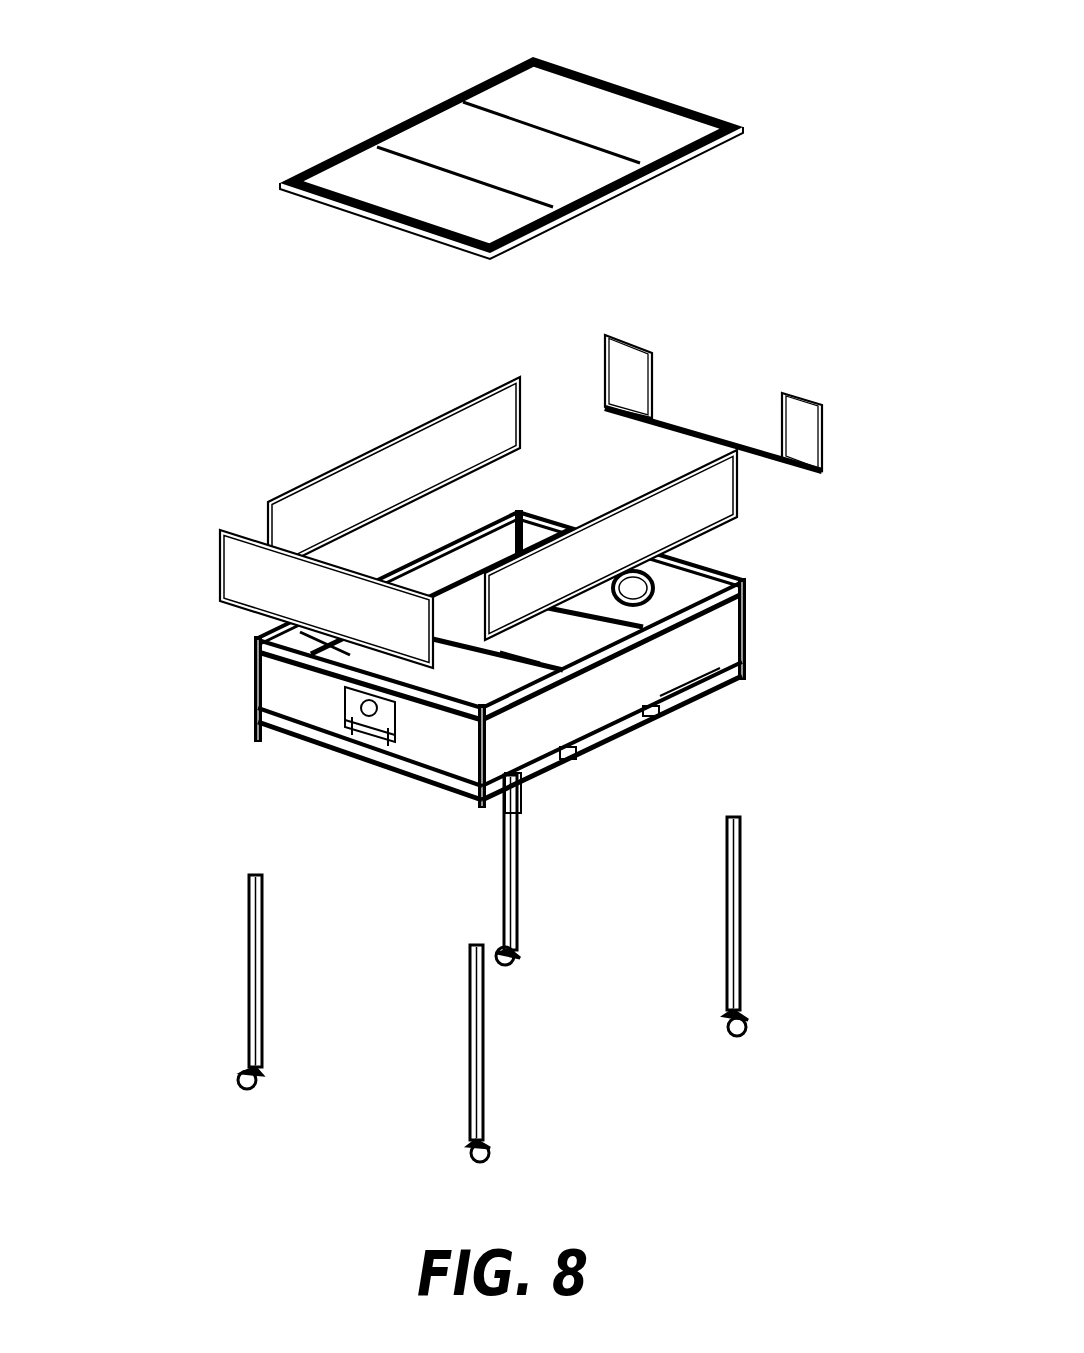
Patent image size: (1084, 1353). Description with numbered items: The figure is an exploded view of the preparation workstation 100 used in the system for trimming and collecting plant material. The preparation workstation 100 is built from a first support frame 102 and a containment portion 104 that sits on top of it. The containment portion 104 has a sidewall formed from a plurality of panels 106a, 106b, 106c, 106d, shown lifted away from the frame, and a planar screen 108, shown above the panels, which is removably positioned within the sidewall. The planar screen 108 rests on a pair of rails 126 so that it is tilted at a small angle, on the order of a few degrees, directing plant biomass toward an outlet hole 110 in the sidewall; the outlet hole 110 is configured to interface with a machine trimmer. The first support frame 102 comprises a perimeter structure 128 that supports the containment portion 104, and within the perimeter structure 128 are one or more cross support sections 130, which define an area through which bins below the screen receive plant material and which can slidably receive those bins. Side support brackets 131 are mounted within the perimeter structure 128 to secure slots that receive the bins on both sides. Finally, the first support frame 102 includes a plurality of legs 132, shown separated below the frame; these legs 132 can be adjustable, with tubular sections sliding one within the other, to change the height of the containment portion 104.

The preparation workstation 100 is at (188, 60).
The first support frame 102 is at (254, 688).
The containment portion 104 is at (210, 760).
The panel 106a is at (377, 447).
The panel 106b is at (310, 558).
The panel 106c is at (737, 508).
The panel 106d is at (822, 435).
The planar screen 108 is at (712, 112).
The outlet hole 110 is at (650, 573).
The pair of rails 126 is at (340, 643).
The perimeter structure 128 is at (690, 687).
The cross support sections 130 is at (500, 652).
The side support brackets 131 is at (632, 606).
The plurality of legs 132 is at (743, 922).